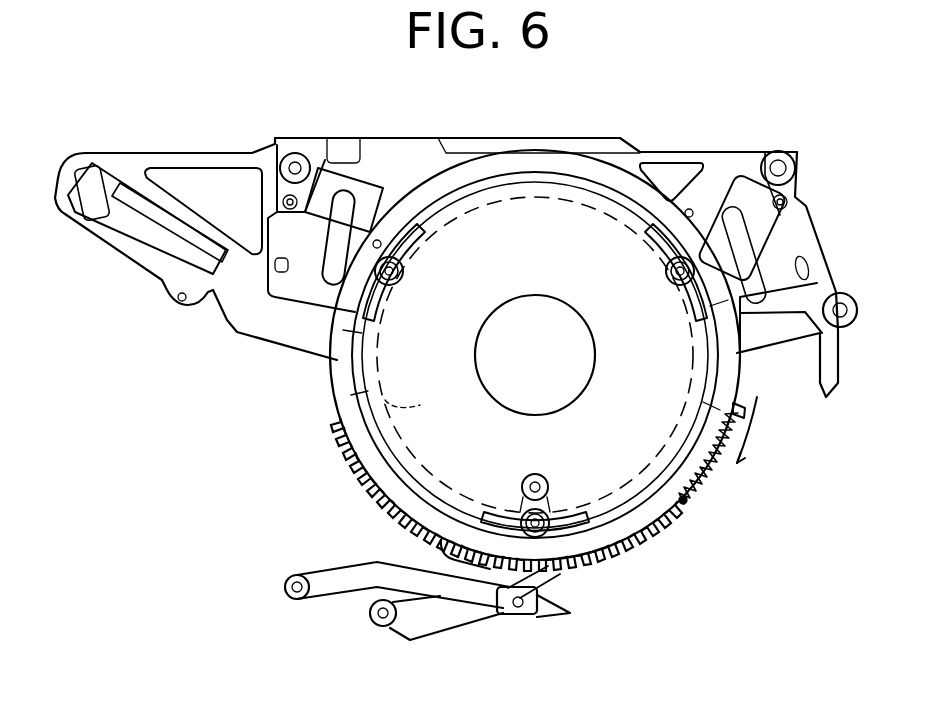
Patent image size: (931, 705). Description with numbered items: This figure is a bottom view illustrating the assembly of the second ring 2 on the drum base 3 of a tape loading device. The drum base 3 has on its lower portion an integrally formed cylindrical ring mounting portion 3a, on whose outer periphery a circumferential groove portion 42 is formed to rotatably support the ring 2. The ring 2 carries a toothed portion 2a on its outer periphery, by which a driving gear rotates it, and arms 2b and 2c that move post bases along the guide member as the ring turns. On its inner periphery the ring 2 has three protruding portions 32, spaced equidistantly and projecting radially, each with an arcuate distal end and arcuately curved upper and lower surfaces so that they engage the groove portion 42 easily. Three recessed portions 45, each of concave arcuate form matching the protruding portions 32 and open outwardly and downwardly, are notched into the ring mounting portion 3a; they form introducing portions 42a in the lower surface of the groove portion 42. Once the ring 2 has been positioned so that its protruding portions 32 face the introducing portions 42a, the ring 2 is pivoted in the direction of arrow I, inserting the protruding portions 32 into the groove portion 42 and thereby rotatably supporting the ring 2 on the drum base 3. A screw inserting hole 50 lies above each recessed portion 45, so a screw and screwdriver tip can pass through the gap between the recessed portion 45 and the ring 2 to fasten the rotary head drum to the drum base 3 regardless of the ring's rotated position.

The second ring 2 is at (345, 378).
The toothed portion 2a is at (655, 540).
The arm 2b is at (467, 612).
The arm 2c is at (342, 583).
The drum base 3 is at (407, 157).
The ring mounting portion 3a is at (535, 215).
The protruding portion 32 is at (455, 215).
The groove portion 42 is at (398, 404).
The introducing portion 42a is at (400, 290).
The recessed portion 45 is at (410, 270).
The screw inserting hole 50 is at (402, 281).
The arrow I is at (756, 430).